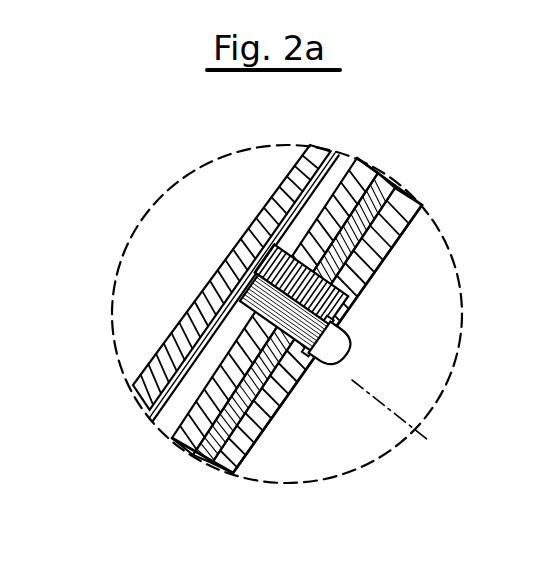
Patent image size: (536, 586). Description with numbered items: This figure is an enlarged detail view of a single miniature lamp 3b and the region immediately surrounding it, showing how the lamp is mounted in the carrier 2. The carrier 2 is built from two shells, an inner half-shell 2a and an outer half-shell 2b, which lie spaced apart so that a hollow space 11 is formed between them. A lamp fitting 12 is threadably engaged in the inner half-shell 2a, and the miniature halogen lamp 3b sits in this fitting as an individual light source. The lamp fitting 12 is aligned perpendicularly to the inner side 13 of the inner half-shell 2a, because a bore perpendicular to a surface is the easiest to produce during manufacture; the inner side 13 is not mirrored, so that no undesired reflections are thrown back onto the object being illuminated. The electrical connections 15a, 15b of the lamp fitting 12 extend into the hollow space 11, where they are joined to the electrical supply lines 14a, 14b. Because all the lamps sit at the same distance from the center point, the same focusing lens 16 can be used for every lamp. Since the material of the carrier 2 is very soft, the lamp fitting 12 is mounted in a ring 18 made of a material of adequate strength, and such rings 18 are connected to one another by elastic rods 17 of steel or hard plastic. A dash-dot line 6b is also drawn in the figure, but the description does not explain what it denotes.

The carrier 2 is at (334, 143).
The inner half-shell 2a is at (258, 483).
The outer half-shell 2b is at (146, 390).
The miniature lamp 3b is at (322, 366).
The bolt axis 6b is at (428, 440).
The hollow space 11 is at (178, 402).
The lamp fitting 12 is at (288, 362).
The inner side 13 is at (262, 432).
The electrical supply line 14a is at (155, 421).
The electrical supply line 14b is at (164, 424).
The electrical connection 15a is at (238, 265).
The electrical connection 15b is at (236, 280).
The focusing lens 16 is at (344, 344).
The elastic rod 17 is at (389, 189).
The ring 18 is at (348, 294).